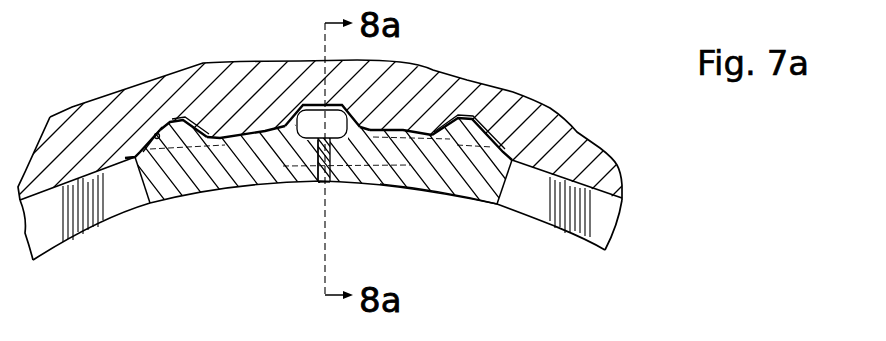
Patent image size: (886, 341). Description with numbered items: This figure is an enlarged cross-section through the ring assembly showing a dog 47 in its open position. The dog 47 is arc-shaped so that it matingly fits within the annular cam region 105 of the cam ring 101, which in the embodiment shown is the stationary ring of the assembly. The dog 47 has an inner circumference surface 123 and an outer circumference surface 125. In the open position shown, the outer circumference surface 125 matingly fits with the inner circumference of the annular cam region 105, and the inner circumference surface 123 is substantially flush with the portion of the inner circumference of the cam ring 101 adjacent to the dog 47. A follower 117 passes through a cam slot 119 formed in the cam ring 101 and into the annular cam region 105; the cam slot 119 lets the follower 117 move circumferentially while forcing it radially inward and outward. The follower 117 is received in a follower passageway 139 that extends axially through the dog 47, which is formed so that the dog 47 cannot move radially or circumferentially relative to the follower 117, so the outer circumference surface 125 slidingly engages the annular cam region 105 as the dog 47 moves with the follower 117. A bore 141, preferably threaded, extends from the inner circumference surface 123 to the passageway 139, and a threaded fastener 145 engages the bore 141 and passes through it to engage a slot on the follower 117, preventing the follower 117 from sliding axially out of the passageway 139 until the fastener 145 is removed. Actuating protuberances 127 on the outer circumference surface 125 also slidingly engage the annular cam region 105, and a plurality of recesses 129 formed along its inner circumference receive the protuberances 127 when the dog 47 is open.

The dog 47 is at (182, 203).
The cam ring 101 is at (510, 108).
The annular cam region 105 is at (608, 218).
The follower 117 is at (295, 111).
The cam slot 119 is at (413, 187).
The inner circumference surface 123 is at (452, 194).
The outer circumference surface 125 is at (406, 128).
The actuating protuberance 127 is at (164, 121).
The recess 129 is at (156, 133).
The follower passageway 139 is at (338, 183).
The bore 141 is at (304, 183).
The threaded fastener 145 is at (324, 183).